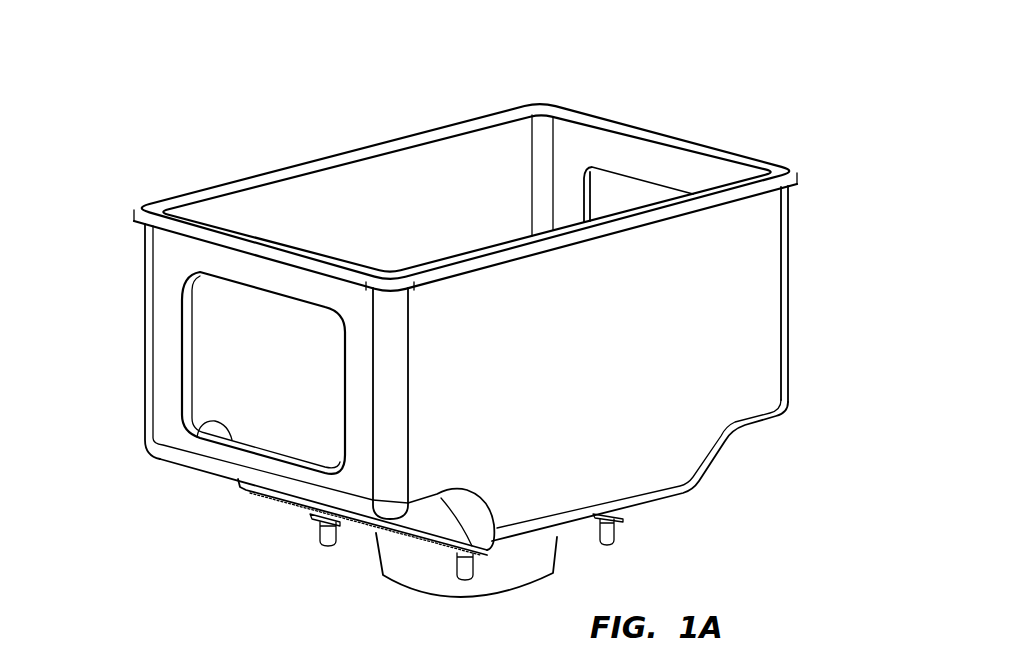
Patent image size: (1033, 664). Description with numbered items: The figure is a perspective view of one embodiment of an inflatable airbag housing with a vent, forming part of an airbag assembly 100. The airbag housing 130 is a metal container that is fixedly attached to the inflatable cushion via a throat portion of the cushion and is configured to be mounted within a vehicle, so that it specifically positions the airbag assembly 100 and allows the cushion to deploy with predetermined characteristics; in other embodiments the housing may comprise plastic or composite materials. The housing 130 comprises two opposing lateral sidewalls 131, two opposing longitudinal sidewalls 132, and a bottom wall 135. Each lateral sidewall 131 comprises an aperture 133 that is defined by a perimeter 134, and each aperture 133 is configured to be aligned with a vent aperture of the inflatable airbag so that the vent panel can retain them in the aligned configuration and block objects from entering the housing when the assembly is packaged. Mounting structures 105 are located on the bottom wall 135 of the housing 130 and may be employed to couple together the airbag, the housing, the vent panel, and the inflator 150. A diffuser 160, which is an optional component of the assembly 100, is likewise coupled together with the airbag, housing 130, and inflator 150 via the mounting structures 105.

The airbag assembly 100 is at (732, 90).
The airbag housing 130 is at (314, 190).
The lateral sidewalls 131 is at (194, 267).
The longitudinal sidewalls 132 is at (440, 199).
The aperture 133 is at (225, 355).
The perimeter 134 is at (185, 403).
The bottom wall 135 is at (430, 523).
The inflator 150 is at (277, 412).
The mounting structures 105 is at (317, 532).
The diffuser 160 is at (420, 557).